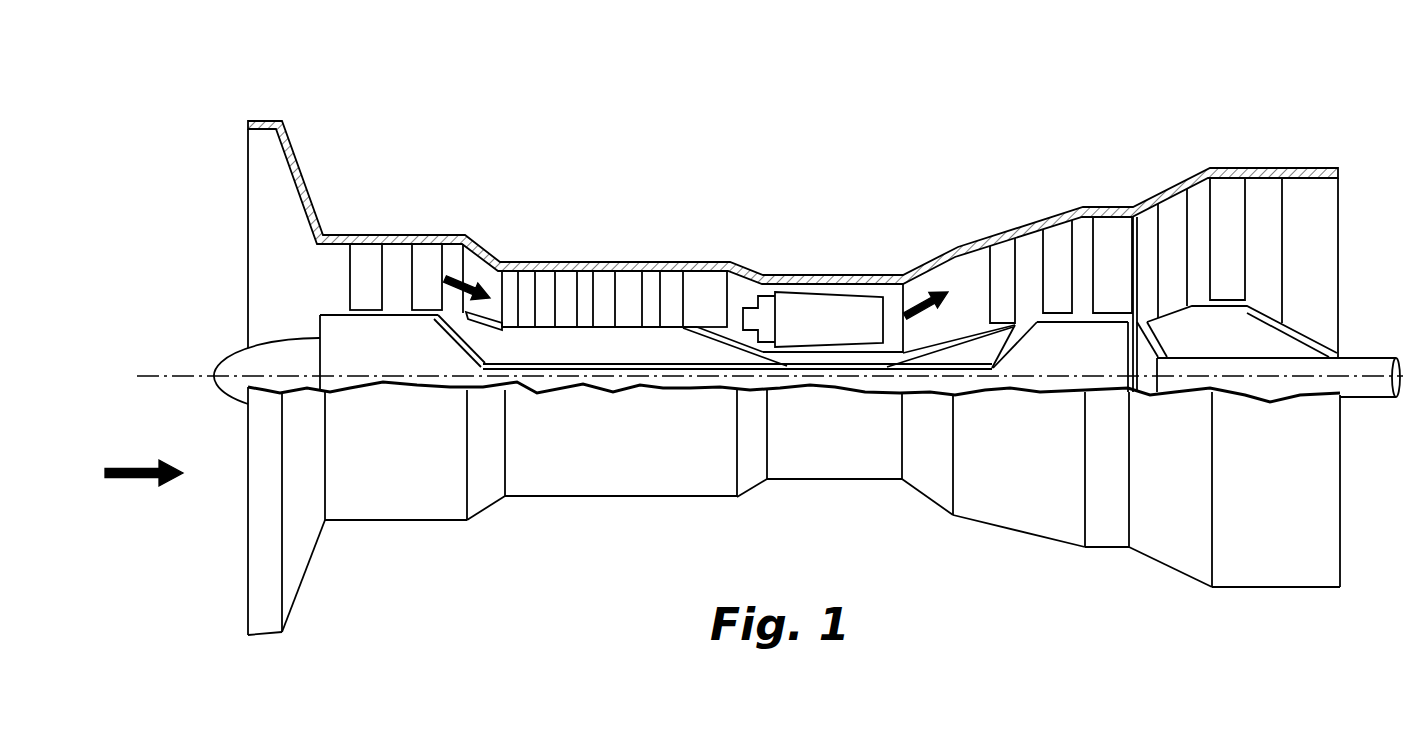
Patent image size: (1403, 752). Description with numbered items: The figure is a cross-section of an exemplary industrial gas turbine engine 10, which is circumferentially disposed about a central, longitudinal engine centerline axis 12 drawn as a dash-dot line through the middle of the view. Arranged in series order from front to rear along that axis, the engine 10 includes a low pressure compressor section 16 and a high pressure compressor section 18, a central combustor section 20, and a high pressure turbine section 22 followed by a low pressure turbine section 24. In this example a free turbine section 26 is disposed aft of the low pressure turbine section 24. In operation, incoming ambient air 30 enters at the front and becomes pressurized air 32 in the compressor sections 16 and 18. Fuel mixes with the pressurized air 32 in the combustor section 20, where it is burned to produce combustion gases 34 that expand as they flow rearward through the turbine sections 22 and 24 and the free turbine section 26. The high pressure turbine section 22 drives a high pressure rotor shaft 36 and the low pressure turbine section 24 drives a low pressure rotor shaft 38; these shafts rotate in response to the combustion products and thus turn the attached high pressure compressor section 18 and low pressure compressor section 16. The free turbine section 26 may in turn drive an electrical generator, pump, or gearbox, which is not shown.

The industrial gas turbine engine 10 is at (903, 114).
The engine centerline axis 12 is at (182, 375).
The low pressure compressor section 16 is at (387, 216).
The high pressure compressor section 18 is at (641, 226).
The combustor section 20 is at (805, 303).
The high pressure turbine section 22 is at (1010, 201).
The low pressure turbine section 24 is at (1123, 188).
The free turbine section 26 is at (1283, 164).
The incoming ambient air 30 is at (140, 467).
The pressurized air 32 is at (468, 282).
The combustion gases 34 is at (914, 300).
The high pressure rotor shaft 36 is at (826, 247).
The low pressure rotor shaft 38 is at (480, 352).